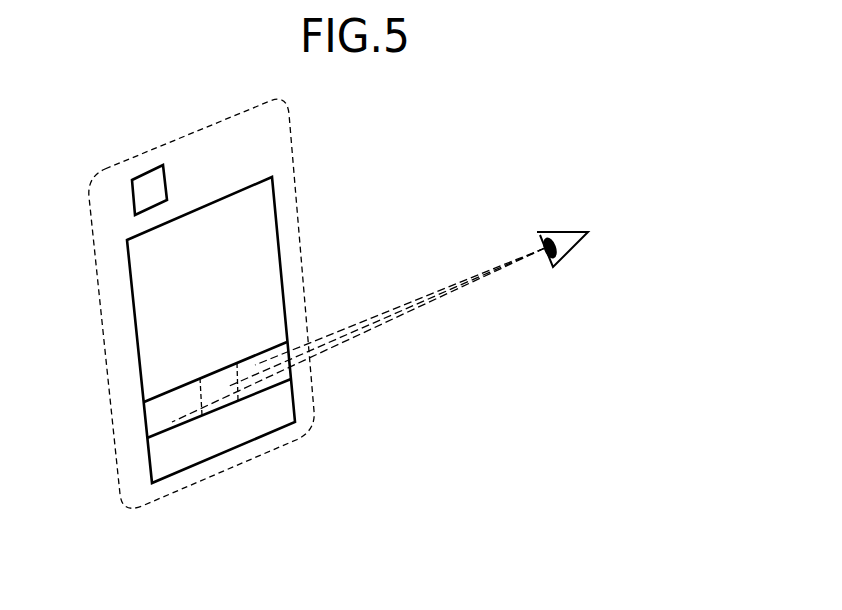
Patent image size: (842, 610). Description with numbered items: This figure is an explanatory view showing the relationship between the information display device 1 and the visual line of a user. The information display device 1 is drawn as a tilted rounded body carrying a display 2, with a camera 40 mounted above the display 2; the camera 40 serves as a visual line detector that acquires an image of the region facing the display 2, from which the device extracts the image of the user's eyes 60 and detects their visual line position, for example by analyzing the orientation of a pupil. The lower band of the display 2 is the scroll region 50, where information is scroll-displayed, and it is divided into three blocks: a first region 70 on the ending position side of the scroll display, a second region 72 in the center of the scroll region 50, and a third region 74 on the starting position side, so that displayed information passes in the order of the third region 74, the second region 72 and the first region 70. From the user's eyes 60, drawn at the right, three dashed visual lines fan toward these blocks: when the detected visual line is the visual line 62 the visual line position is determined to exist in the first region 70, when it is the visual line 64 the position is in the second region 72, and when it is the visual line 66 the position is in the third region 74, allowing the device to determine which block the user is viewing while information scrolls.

The information display device 1 is at (108, 168).
The display 2 is at (275, 212).
The camera 40 is at (150, 168).
The scroll region 50 is at (162, 395).
The user's eyes 60 is at (563, 232).
The visual line 62 is at (358, 340).
The visual line 64 is at (320, 343).
The visual line 66 is at (354, 325).
The first region 70 is at (177, 424).
The second region 72 is at (225, 406).
The third region 74 is at (268, 388).